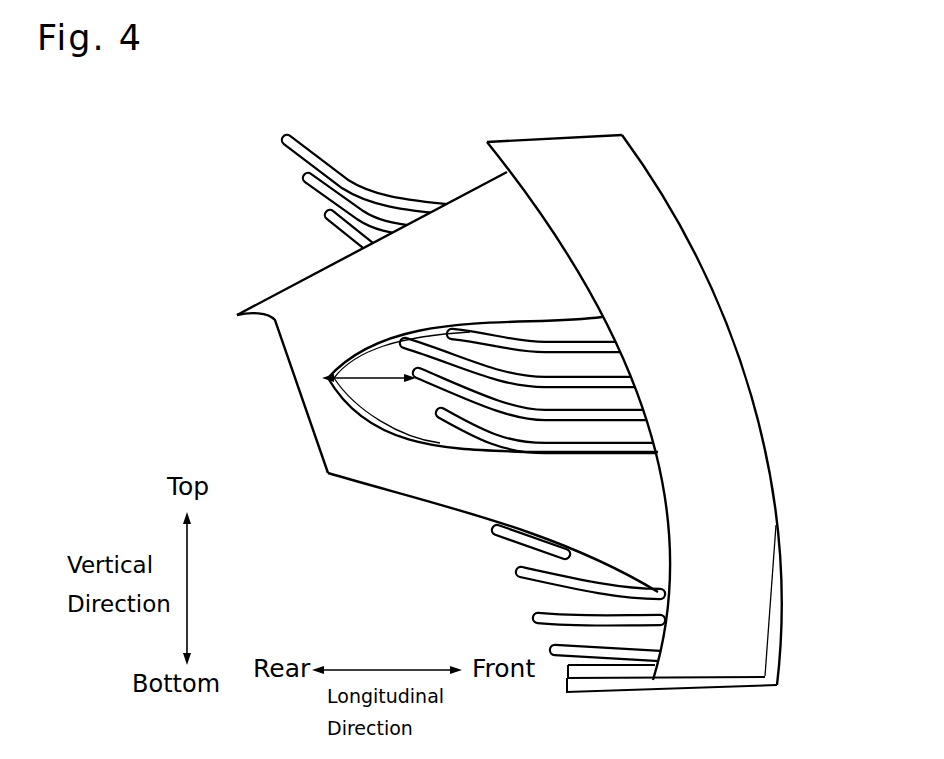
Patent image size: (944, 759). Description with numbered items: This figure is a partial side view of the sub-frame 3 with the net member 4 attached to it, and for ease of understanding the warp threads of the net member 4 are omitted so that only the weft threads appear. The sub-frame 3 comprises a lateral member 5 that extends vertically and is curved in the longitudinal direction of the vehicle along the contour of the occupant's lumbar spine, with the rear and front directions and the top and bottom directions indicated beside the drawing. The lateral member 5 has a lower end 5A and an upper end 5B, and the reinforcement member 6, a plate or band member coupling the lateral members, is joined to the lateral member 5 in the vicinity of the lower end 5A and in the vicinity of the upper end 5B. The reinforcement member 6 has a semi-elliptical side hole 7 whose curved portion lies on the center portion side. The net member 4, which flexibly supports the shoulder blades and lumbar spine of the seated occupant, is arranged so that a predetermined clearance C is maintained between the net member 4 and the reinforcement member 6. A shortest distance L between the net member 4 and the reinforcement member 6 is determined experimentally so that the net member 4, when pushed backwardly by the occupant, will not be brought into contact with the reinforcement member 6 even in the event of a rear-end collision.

The sub-frame 3 is at (549, 399).
The net member 4 is at (337, 177).
The lateral member 5 is at (674, 399).
The lower end 5A is at (767, 667).
The upper end 5B is at (630, 142).
The reinforcement member 6 is at (298, 295).
The semi-elliptical side hole 7 is at (585, 330).
The shortest distance L is at (370, 382).
The clearance C is at (418, 432).